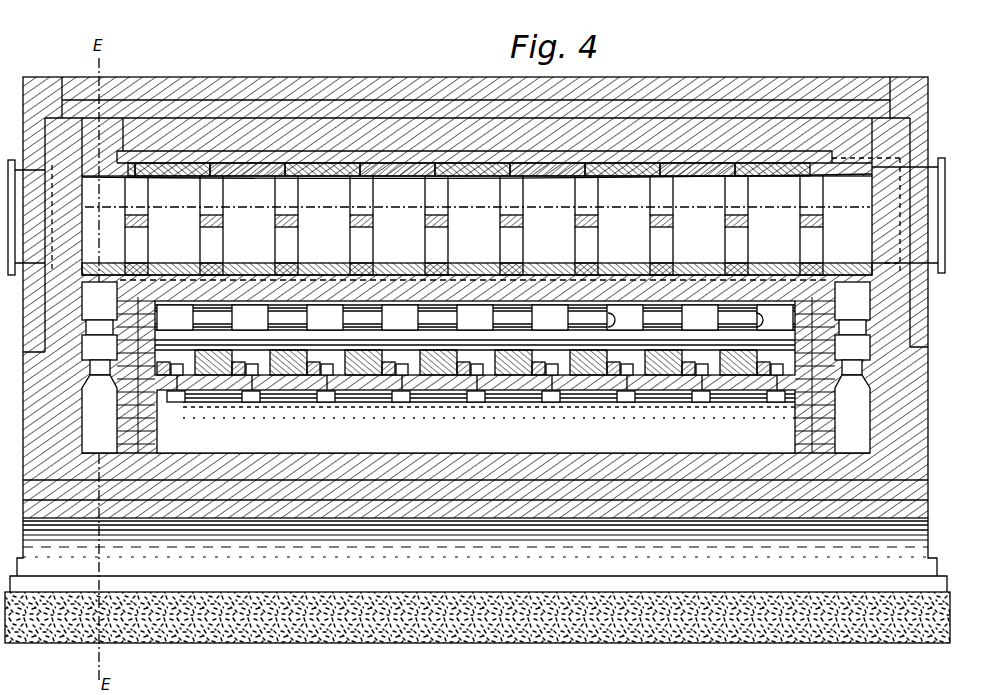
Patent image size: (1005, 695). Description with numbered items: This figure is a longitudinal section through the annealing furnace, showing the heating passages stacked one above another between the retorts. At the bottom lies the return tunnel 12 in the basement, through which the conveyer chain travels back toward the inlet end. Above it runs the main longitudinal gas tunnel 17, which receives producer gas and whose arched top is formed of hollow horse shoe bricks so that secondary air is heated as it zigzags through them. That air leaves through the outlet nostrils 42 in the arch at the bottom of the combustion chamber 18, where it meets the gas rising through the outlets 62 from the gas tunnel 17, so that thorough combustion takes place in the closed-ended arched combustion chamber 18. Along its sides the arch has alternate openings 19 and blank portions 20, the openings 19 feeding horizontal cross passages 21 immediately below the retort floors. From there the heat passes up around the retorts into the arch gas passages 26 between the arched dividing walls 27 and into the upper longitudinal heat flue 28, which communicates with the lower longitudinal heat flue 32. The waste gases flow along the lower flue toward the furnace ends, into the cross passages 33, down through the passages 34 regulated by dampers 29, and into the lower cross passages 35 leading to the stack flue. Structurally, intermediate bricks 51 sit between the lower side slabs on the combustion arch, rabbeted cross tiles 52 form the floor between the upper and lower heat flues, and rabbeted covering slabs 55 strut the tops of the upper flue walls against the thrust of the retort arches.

The return tunnel 12 is at (478, 555).
The main longitudinal gas tunnel 17 is at (476, 421).
The combustion chamber 18 is at (475, 342).
The openings 19 is at (757, 328).
The blank portions 20 is at (475, 320).
The cross passages 21 is at (475, 317).
The arch gas passages 26 is at (281, 191).
The arched dividing walls 27 is at (388, 183).
The upper longitudinal heat flue 28 is at (477, 197).
The dampers 29 is at (109, 322).
The lower longitudinal heat flue 32 is at (474, 245).
The cross passages 33 is at (476, 301).
The passages 34 is at (476, 347).
The lower cross passages 35 is at (476, 406).
The outlet nostrils 42 is at (475, 370).
The intermediate bricks 51 is at (288, 264).
The cross tiles 52 is at (226, 223).
The covering slabs 55 is at (474, 195).
The outlets 62 is at (182, 402).